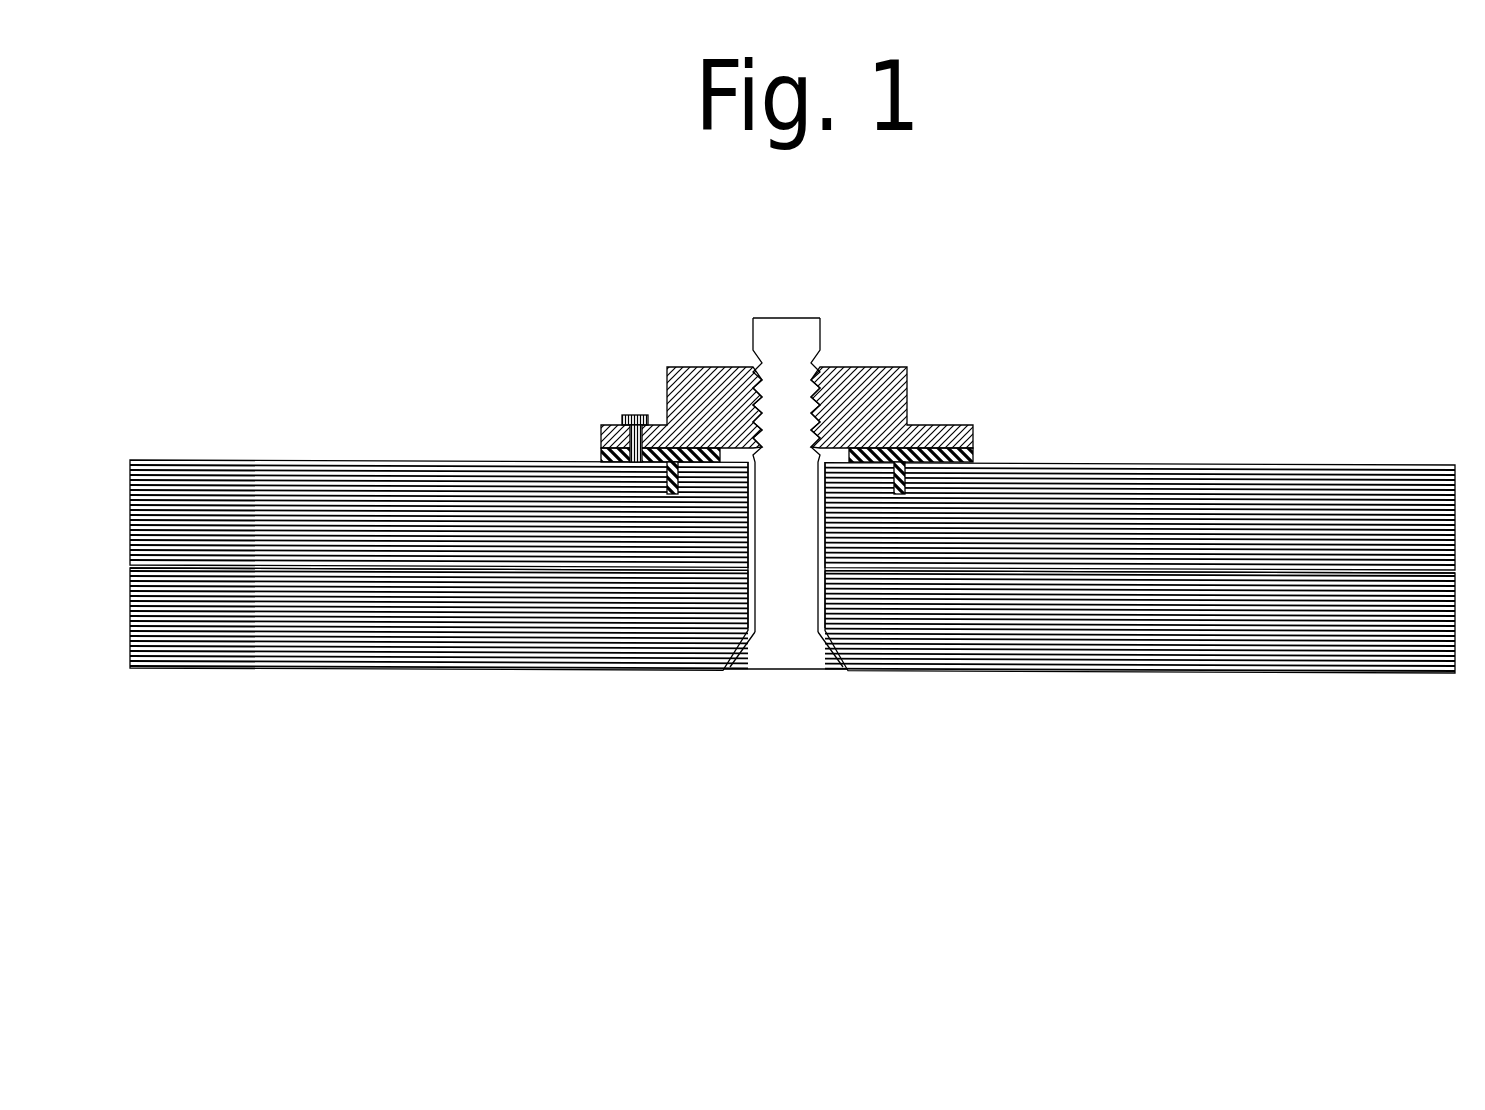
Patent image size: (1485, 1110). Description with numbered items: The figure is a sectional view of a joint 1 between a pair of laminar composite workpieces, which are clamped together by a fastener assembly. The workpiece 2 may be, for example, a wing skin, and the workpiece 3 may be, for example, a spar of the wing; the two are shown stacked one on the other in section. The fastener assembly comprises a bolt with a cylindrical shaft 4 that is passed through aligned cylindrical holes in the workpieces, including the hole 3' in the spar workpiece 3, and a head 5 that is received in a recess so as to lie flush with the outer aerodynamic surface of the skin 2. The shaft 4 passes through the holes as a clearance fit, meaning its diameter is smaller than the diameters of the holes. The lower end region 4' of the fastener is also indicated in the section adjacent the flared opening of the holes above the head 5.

The joint 1 is at (418, 769).
The workpiece 2 is at (181, 671).
The workpiece 3 is at (792, 470).
The cylindrical hole 3' is at (847, 545).
The cylindrical shaft 4 is at (784, 536).
The flared lower end of fitting 4' is at (844, 620).
The head 5 is at (840, 673).